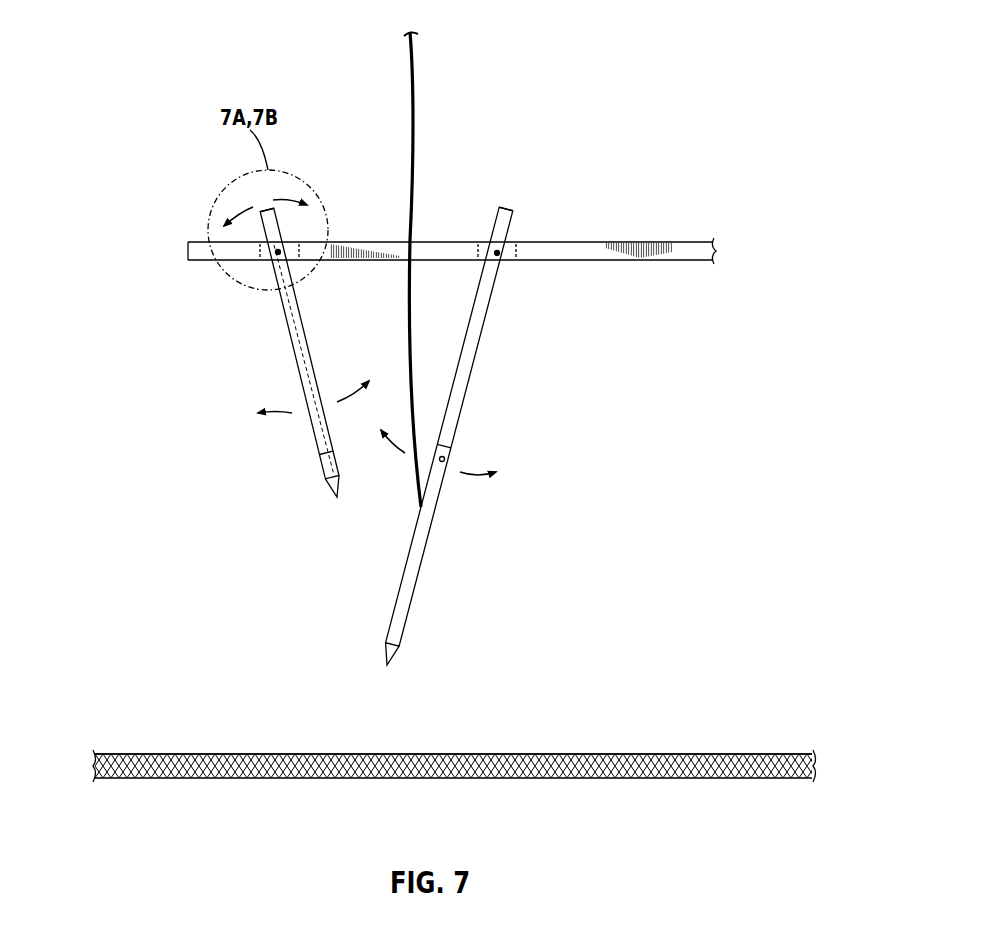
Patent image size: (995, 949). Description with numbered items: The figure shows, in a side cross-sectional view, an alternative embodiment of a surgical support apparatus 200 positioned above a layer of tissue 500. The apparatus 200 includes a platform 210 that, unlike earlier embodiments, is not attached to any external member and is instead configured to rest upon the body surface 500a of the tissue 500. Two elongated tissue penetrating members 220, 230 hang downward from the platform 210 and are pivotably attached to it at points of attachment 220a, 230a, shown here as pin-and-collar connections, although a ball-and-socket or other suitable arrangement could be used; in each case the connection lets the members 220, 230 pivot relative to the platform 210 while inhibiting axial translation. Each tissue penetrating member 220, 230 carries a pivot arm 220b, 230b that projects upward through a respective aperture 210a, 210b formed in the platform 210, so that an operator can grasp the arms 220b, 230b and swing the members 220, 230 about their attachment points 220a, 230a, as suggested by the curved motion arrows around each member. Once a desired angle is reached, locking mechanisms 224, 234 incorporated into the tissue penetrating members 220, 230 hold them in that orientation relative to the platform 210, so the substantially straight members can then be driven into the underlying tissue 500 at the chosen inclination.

The surgical support apparatus 200 is at (213, 44).
The platform 210 is at (188, 250).
The aperture 210a is at (300, 243).
The aperture 210b is at (517, 252).
The tissue penetrating member 220 is at (284, 377).
The point of attachment 220a is at (276, 254).
The pivot arm 220b is at (267, 207).
The tissue penetrating member 230 is at (527, 434).
The point of attachment 230a is at (499, 255).
The pivot arm 230b is at (508, 209).
The locking mechanism 224 is at (518, 229).
The locking mechanism 234 is at (294, 232).
The layer of tissue 500 is at (95, 766).
The body surface 500a is at (185, 754).